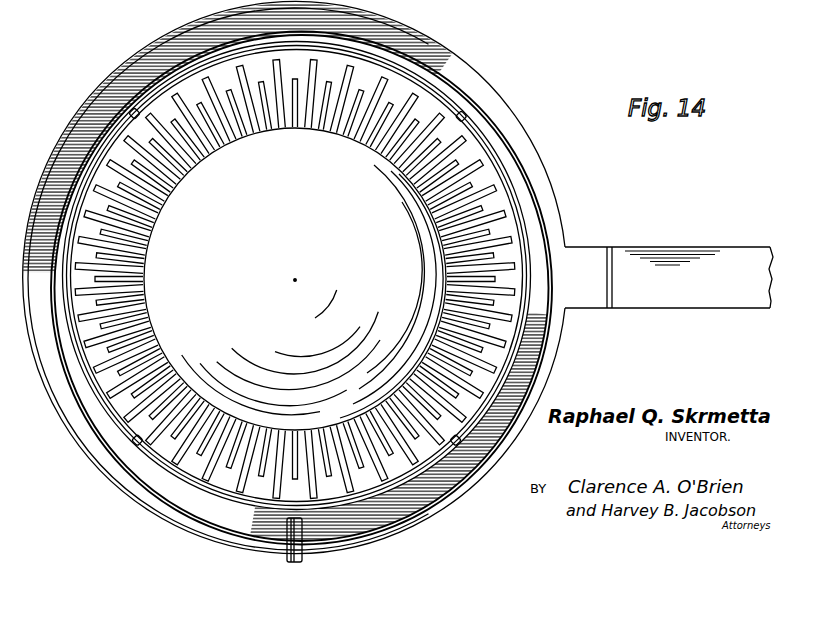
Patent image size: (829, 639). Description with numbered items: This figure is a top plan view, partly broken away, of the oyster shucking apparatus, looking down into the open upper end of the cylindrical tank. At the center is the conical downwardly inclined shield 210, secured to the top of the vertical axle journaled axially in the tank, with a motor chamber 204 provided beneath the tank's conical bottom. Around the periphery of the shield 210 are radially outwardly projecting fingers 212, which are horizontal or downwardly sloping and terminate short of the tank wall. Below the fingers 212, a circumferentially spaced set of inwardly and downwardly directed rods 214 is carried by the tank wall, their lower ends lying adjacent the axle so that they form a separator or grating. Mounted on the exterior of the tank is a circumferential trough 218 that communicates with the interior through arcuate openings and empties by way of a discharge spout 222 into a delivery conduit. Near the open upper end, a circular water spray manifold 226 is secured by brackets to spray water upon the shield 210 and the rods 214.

The motor chamber 204 is at (265, 277).
The conical downwardly inclined shield 210 is at (295, 279).
The fingers 212 is at (346, 96).
The rods 214 is at (425, 108).
The circumferential trough 218 is at (520, 152).
The discharge spout 222 is at (594, 259).
The circular water spray manifold 226 is at (472, 127).